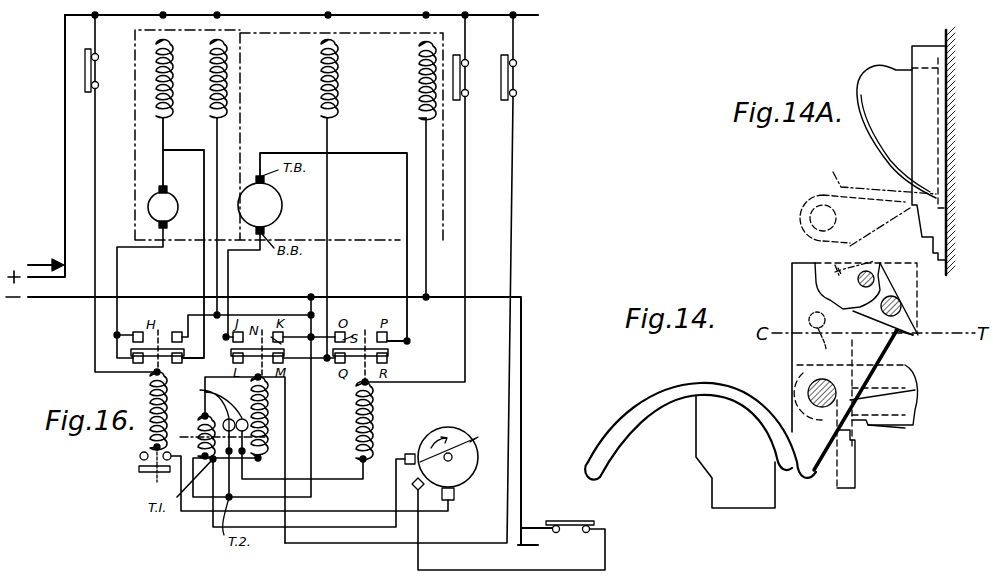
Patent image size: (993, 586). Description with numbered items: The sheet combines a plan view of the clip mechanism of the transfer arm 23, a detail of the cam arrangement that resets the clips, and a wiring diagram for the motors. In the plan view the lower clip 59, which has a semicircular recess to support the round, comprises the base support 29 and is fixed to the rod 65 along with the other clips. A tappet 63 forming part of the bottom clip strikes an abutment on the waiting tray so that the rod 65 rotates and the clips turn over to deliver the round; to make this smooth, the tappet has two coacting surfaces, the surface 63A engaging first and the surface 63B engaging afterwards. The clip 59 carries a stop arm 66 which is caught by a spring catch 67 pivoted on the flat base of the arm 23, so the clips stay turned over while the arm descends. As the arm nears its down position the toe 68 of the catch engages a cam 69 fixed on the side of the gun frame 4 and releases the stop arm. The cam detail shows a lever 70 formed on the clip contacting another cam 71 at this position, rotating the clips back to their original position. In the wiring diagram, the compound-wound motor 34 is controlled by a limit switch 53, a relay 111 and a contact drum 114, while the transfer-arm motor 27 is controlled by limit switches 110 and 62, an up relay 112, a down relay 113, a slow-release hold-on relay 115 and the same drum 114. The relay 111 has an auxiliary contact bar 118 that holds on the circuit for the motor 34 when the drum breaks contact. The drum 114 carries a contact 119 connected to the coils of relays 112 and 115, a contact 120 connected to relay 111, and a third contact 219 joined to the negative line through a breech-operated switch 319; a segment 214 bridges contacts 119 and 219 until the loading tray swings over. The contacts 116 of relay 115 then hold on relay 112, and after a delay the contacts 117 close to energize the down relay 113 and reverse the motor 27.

In FIG. 16, the limit switch 53 is at (103, 78).
In FIG. 16, the motor 34 is at (140, 230).
In FIG. 16, the limit switch 110 is at (462, 75).
In FIG. 16, the switch 62 is at (514, 79).
In FIG. 16, the motor 27 is at (400, 240).
In FIG. 16, the relay 111 is at (151, 388).
In FIG. 16, the contacts 116 is at (207, 399).
In FIG. 16, the hold-on relay 115 is at (200, 425).
In FIG. 16, the contacts 117 is at (243, 418).
In FIG. 16, the relay 112 is at (265, 422).
In FIG. 16, the relay 113 is at (369, 402).
In FIG. 16, the contact drum 114 is at (452, 444).
In FIG. 16, the contact 119 is at (409, 453).
In FIG. 16, the segment 214 is at (474, 446).
In FIG. 16, the contact 219 is at (413, 486).
In FIG. 16, the contact 120 is at (455, 497).
In FIG. 16, the auxiliary contact bar 118 is at (139, 478).
In FIG. 16, the switch 319 is at (566, 522).
In FIG. 14A, the cam 69 is at (912, 99).
In FIG. 14A, the cam 71 is at (862, 138).
In FIG. 14A, the lever 70 is at (878, 175).
In FIG. 14, the lever 70 is at (856, 476).
In FIG. 14A, the rod 65 is at (790, 222).
In FIG. 14, the rod 65 is at (810, 385).
In FIG. 14A, the gun frame 4 is at (950, 160).
In FIG. 14, the transfer arm 23 is at (792, 287).
In FIG. 14, the spring catch 67 is at (920, 290).
In FIG. 14, the toe 68 is at (921, 333).
In FIG. 14, the tappet 63 is at (910, 376).
In FIG. 14, the stop arm 66 is at (903, 448).
In FIG. 14, the lower clip 59 is at (655, 398).
In FIG. 14, the tappet surface 63A is at (905, 400).
In FIG. 14, the tappet surface 63B is at (915, 427).
In FIG. 14, the base support 29 is at (763, 497).